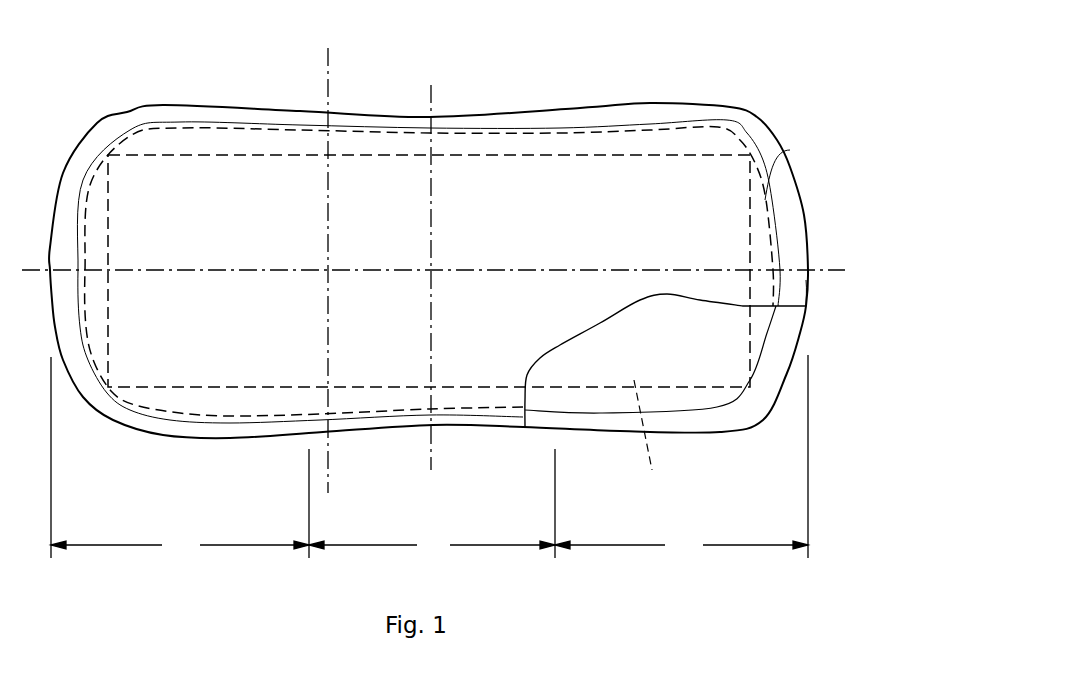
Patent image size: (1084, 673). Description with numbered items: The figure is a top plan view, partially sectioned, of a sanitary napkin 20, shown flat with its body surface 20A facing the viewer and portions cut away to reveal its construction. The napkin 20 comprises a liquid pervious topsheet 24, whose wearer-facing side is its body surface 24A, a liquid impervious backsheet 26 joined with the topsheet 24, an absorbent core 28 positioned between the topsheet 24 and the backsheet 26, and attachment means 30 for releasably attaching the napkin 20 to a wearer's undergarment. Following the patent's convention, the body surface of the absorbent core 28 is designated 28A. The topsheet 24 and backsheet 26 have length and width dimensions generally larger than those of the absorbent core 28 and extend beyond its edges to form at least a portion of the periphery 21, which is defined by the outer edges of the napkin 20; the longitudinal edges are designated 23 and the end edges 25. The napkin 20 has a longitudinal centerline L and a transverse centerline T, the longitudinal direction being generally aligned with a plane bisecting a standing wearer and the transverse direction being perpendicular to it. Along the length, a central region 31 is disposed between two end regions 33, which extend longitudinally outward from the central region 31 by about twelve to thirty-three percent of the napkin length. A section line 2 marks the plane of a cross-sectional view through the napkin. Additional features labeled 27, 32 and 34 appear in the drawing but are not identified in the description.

The sanitary napkin 20 is at (757, 78).
The body surface 20A is at (190, 208).
The periphery 21 is at (647, 103).
The longitudinal edges 23 is at (205, 437).
The topsheet 24 is at (473, 145).
The body surface of topsheet 24A is at (429, 233).
The end edges 25 is at (808, 282).
The backsheet 26 is at (790, 327).
The flange seal region 27 is at (780, 170).
The absorbent core 28 is at (592, 402).
The body surface of absorbent core 28A is at (722, 363).
The attachment means 30 is at (704, 441).
The adhesive strip 32 is at (704, 441).
The release liner 34 is at (652, 470).
The central region 31 is at (432, 545).
The end regions 33 is at (429, 456).
The longitudinal centerline L is at (830, 268).
The transverse centerline T is at (433, 463).
The section line 2 is at (345, 493).